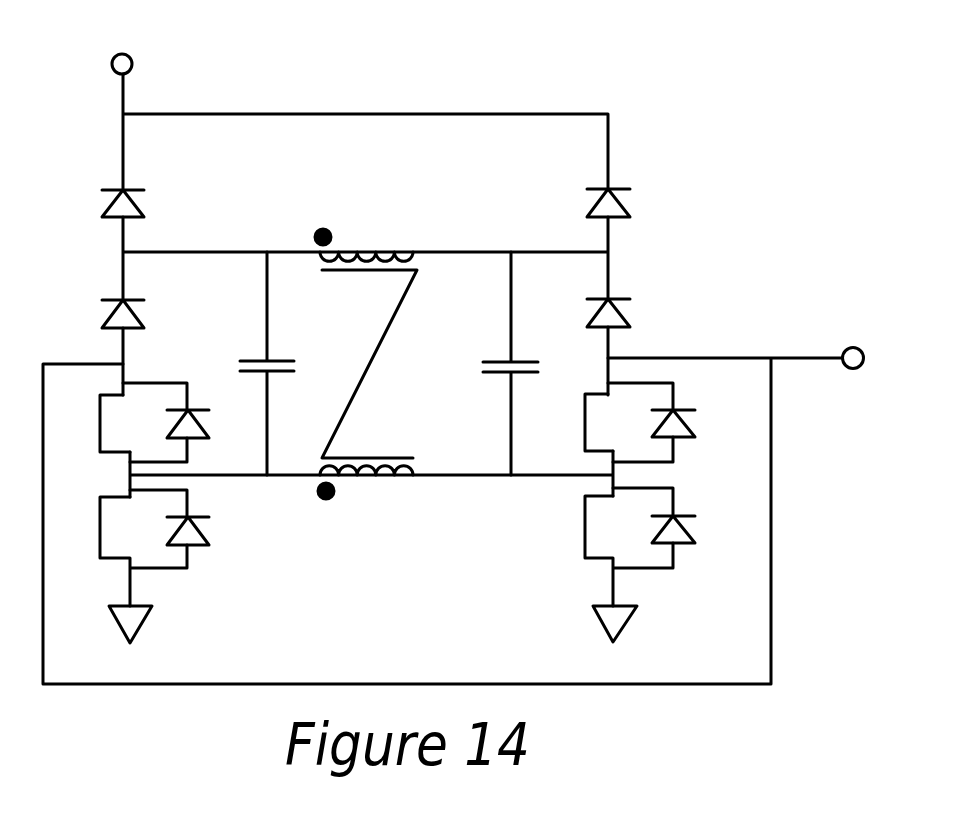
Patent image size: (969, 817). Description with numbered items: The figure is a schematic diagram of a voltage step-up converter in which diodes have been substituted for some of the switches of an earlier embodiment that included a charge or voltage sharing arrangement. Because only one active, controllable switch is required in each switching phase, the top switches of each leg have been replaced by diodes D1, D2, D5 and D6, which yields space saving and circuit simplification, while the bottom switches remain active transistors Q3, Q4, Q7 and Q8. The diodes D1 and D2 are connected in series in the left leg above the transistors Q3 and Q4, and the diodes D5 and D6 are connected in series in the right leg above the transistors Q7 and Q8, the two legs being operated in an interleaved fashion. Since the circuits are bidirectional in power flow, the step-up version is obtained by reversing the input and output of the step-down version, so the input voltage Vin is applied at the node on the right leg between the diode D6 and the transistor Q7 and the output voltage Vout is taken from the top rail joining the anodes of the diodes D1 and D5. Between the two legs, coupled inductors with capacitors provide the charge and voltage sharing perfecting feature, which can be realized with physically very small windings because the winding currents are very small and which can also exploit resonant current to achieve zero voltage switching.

The output voltage Vout is at (126, 44).
The input voltage Vin is at (855, 383).
The diode D1 is at (98, 207).
The diode D2 is at (98, 318).
The diode D5 is at (637, 206).
The diode D6 is at (638, 317).
The transistor Q3 is at (154, 422).
The transistor Q4 is at (154, 566).
The transistor Q7 is at (640, 422).
The transistor Q8 is at (640, 565).